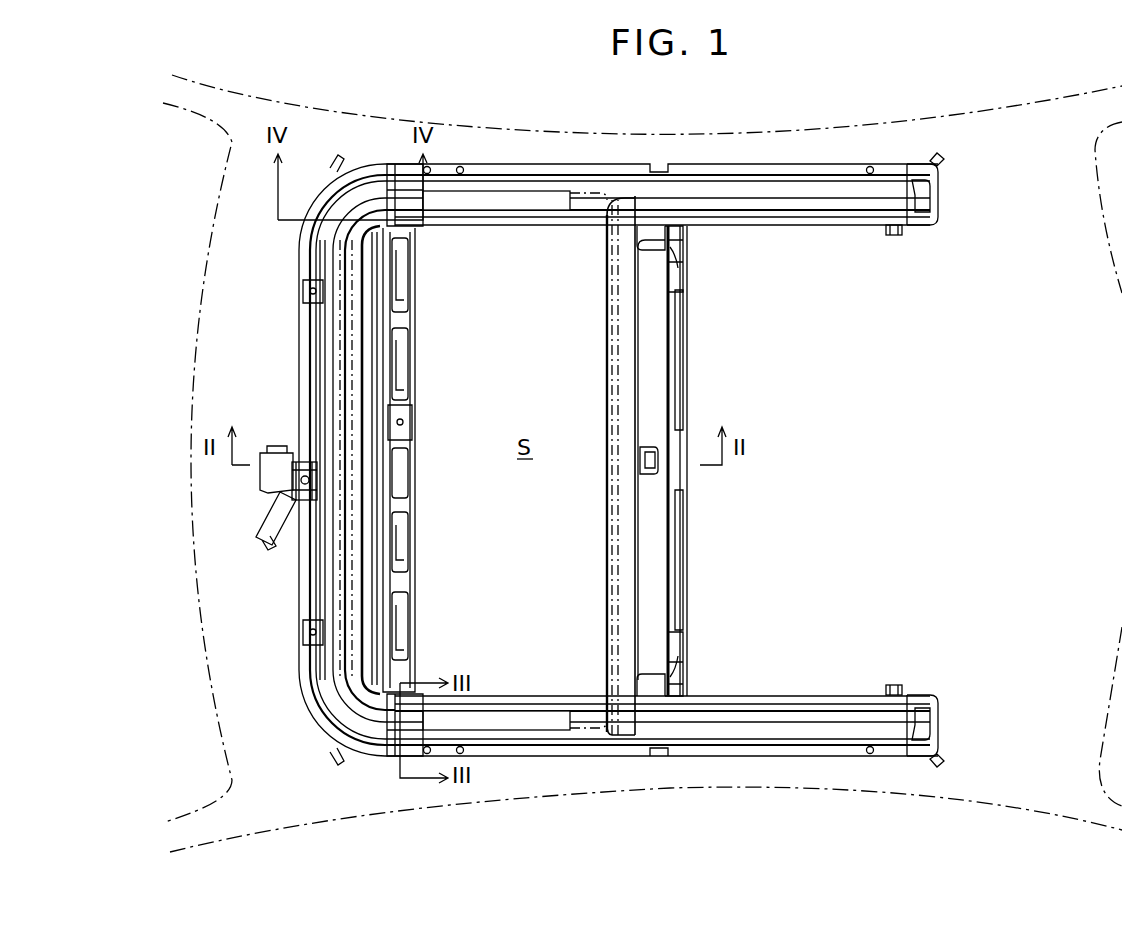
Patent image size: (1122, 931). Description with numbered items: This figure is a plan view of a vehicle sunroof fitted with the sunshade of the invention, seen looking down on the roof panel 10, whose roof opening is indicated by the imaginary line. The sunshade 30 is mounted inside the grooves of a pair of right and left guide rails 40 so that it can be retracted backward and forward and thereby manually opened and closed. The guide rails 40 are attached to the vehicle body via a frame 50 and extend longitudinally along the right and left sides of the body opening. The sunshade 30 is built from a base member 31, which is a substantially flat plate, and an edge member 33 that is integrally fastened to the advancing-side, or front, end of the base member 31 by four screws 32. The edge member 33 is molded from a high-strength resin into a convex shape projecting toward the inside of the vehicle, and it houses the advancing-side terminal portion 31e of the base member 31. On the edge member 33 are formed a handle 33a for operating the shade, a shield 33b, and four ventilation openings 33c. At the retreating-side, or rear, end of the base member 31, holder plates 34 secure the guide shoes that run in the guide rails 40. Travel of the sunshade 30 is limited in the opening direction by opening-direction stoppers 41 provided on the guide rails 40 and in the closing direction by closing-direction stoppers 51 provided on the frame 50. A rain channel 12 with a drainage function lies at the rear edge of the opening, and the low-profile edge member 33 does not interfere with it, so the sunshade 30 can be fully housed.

The roof panel 10 is at (192, 468).
The rain channel 12 is at (608, 540).
The sunshade 30 is at (666, 383).
The base member 31 is at (655, 545).
The advancing-side terminal portion 31e is at (392, 358).
The screws 32 is at (412, 418).
The edge member 33 is at (372, 582).
The handle 33a is at (408, 463).
The shield 33b is at (372, 395).
The ventilation openings 33c is at (408, 578).
The holder plates 34 is at (660, 235).
The guide rails 40 is at (524, 225).
The opening-direction stoppers 41 is at (894, 237).
The frame 50 is at (330, 720).
The closing-direction stoppers 51 is at (385, 220).